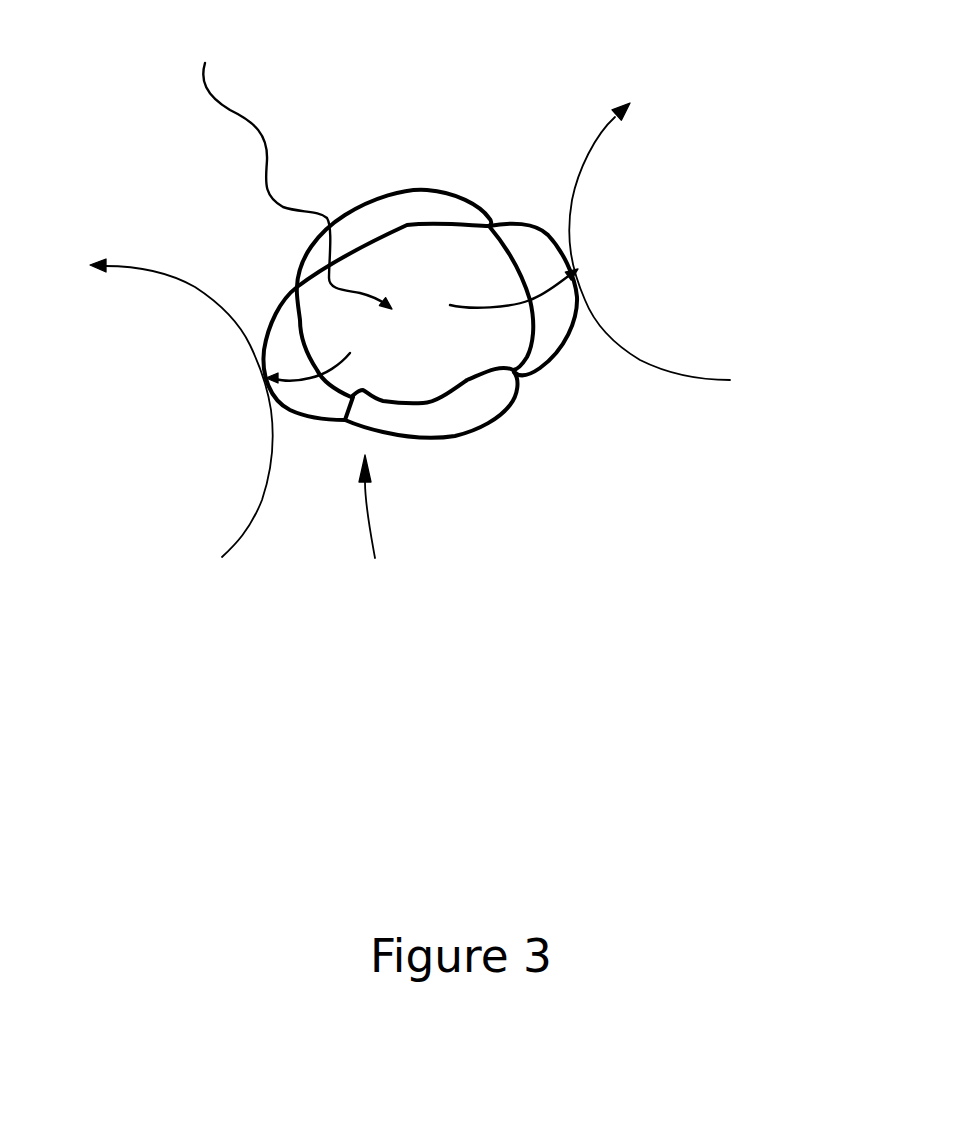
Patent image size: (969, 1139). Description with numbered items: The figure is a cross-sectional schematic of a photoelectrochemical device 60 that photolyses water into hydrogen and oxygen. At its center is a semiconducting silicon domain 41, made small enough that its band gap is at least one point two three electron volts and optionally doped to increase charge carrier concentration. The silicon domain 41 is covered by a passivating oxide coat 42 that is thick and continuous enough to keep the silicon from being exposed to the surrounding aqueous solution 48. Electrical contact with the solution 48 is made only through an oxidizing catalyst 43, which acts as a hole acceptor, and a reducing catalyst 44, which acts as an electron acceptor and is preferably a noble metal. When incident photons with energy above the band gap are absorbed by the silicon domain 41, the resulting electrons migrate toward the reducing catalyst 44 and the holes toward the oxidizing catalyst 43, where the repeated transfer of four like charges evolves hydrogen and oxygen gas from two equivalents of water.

The semiconducting silicon domain 41 is at (508, 348).
The passivating oxide coat 42 is at (417, 203).
The oxidizing catalyst 43 is at (283, 333).
The reducing catalyst 44 is at (553, 330).
The aqueous solution 48 is at (428, 364).
The photoelectrochemical device 60 is at (387, 537).